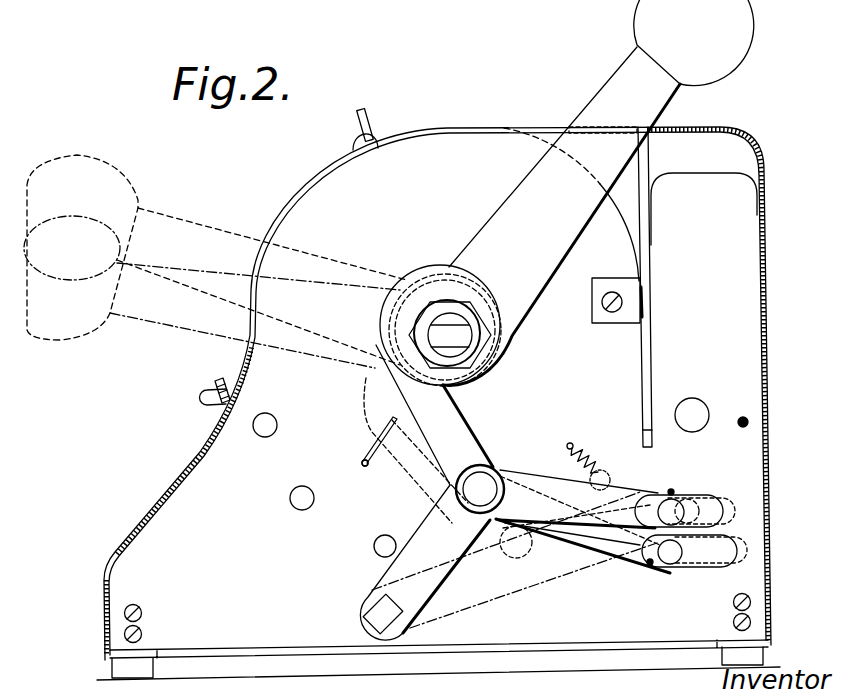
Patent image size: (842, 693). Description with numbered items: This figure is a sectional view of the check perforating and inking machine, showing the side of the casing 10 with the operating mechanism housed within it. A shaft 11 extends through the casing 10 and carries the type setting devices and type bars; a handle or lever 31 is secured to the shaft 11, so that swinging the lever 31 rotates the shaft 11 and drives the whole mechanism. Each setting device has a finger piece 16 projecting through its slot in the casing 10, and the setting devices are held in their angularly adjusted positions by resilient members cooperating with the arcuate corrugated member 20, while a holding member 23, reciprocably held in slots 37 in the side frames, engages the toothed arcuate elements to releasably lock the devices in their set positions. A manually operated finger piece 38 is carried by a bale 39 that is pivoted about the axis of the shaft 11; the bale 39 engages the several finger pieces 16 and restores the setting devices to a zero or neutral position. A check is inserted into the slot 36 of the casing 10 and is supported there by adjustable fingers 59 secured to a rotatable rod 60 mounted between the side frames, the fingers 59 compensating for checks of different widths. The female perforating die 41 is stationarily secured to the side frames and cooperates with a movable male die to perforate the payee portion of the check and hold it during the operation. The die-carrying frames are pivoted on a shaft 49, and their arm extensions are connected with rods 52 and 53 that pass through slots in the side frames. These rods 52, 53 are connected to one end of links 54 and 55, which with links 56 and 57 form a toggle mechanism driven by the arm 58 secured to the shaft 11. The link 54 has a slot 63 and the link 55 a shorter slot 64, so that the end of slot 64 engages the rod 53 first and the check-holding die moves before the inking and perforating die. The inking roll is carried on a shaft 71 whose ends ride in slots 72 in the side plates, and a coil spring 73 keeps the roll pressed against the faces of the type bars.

The casing 10 is at (767, 216).
The shaft 11 is at (470, 328).
The finger piece 16 is at (372, 118).
The corrugated member 20 is at (306, 488).
The holding member 23 is at (364, 458).
The handle or lever 31 is at (208, 266).
The slot 36 is at (651, 165).
The slots 37 is at (362, 466).
The finger piece 38 is at (206, 398).
The bale 39 is at (221, 380).
The female perforating die 41 is at (641, 302).
The shaft 49 is at (697, 406).
The rod 52 is at (680, 500).
The rod 53 is at (669, 575).
The link 54 is at (541, 480).
The link 55 is at (576, 566).
The link 56 is at (425, 537).
The link 57 is at (470, 415).
The arm 58 is at (428, 270).
The adjustable fingers 59 is at (642, 430).
The rotatable rod 60 is at (743, 416).
The slot 63 is at (671, 489).
The slot 64 is at (648, 566).
The shaft 71 is at (608, 472).
The slots 72 is at (597, 462).
The coil spring 73 is at (581, 436).